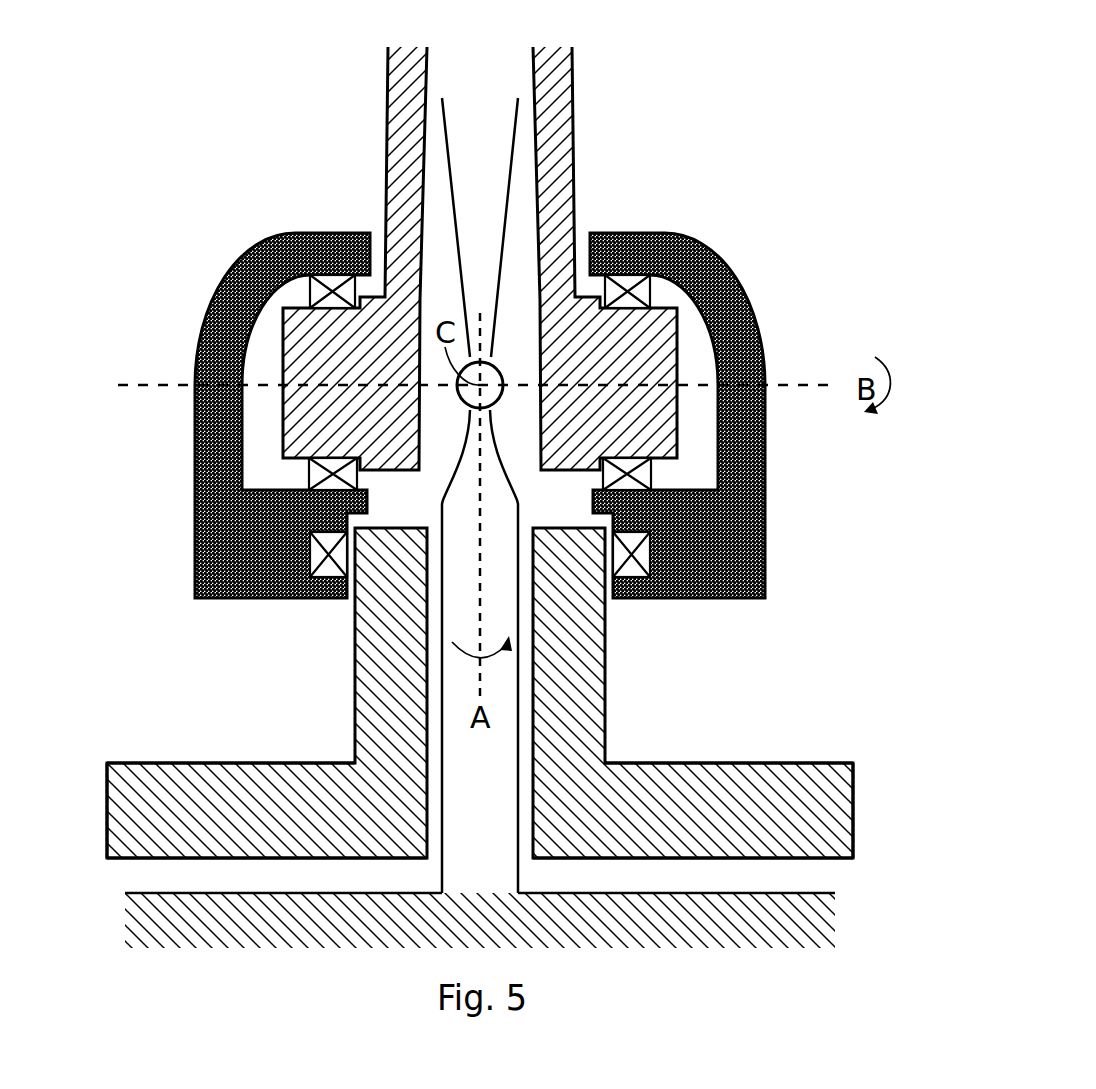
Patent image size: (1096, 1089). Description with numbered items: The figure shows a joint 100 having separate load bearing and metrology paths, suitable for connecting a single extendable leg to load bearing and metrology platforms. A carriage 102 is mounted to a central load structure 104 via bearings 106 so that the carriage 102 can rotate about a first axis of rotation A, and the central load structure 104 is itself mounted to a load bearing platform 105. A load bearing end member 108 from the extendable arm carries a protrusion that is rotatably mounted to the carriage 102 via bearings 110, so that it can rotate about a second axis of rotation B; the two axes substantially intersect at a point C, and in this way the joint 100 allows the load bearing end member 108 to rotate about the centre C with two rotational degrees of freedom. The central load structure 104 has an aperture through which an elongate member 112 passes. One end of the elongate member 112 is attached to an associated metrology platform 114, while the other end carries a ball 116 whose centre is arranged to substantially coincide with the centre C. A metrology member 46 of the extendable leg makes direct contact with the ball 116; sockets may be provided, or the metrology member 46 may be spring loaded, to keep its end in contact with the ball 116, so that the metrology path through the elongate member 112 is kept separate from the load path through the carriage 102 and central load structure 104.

The metrology member 46 is at (494, 99).
The joint 100 is at (784, 155).
The carriage 102 is at (256, 266).
The central load structure 104 is at (351, 667).
The load bearing platform 105 is at (245, 825).
The bearings 106 is at (327, 552).
The load bearing end member 108 is at (390, 90).
The bearings 110 is at (335, 275).
The elongate member 112 is at (507, 858).
The metrology platform 114 is at (508, 933).
The ball 116 is at (462, 405).